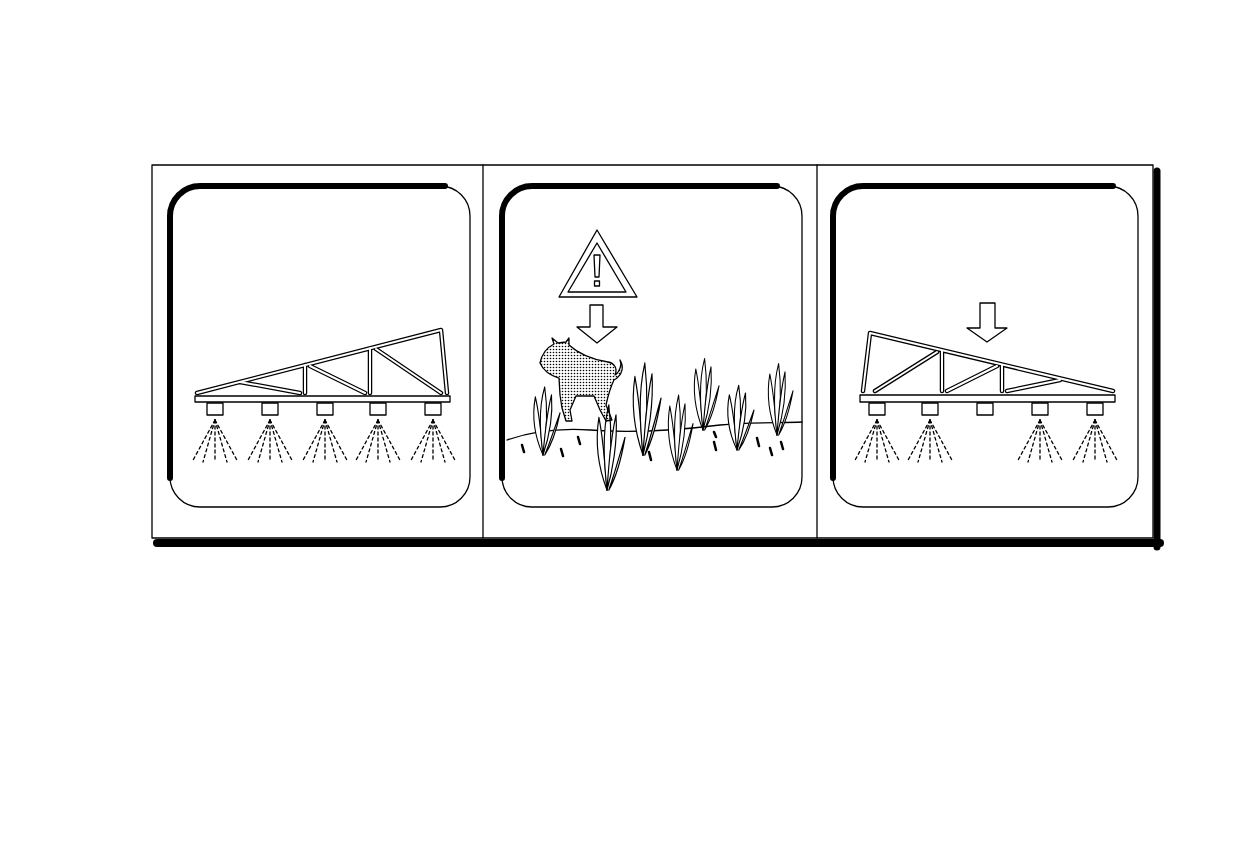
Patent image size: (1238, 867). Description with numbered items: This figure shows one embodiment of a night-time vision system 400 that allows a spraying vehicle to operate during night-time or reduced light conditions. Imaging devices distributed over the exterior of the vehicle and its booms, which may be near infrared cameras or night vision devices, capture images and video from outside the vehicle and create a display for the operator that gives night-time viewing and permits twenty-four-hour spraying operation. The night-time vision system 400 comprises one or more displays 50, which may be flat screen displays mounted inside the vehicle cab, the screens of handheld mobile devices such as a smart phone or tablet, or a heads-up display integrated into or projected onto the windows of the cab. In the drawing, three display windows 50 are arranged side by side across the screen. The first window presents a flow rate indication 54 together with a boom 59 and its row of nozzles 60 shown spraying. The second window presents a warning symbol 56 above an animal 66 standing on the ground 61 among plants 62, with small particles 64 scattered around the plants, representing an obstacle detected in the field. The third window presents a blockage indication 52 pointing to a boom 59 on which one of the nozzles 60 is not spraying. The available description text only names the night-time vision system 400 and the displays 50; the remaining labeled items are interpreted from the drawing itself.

The night-time vision system 400 is at (306, 117).
The display 50 is at (390, 203).
The blockage indicator 52 is at (1012, 315).
The flow rate indicator 54 is at (215, 312).
The warning symbol 56 is at (622, 267).
The boom 59 is at (205, 396).
The nozzles 60 is at (386, 415).
The ground 61 is at (767, 490).
The plants 62 is at (735, 458).
The particles 64 is at (579, 446).
The animal 66 is at (608, 363).